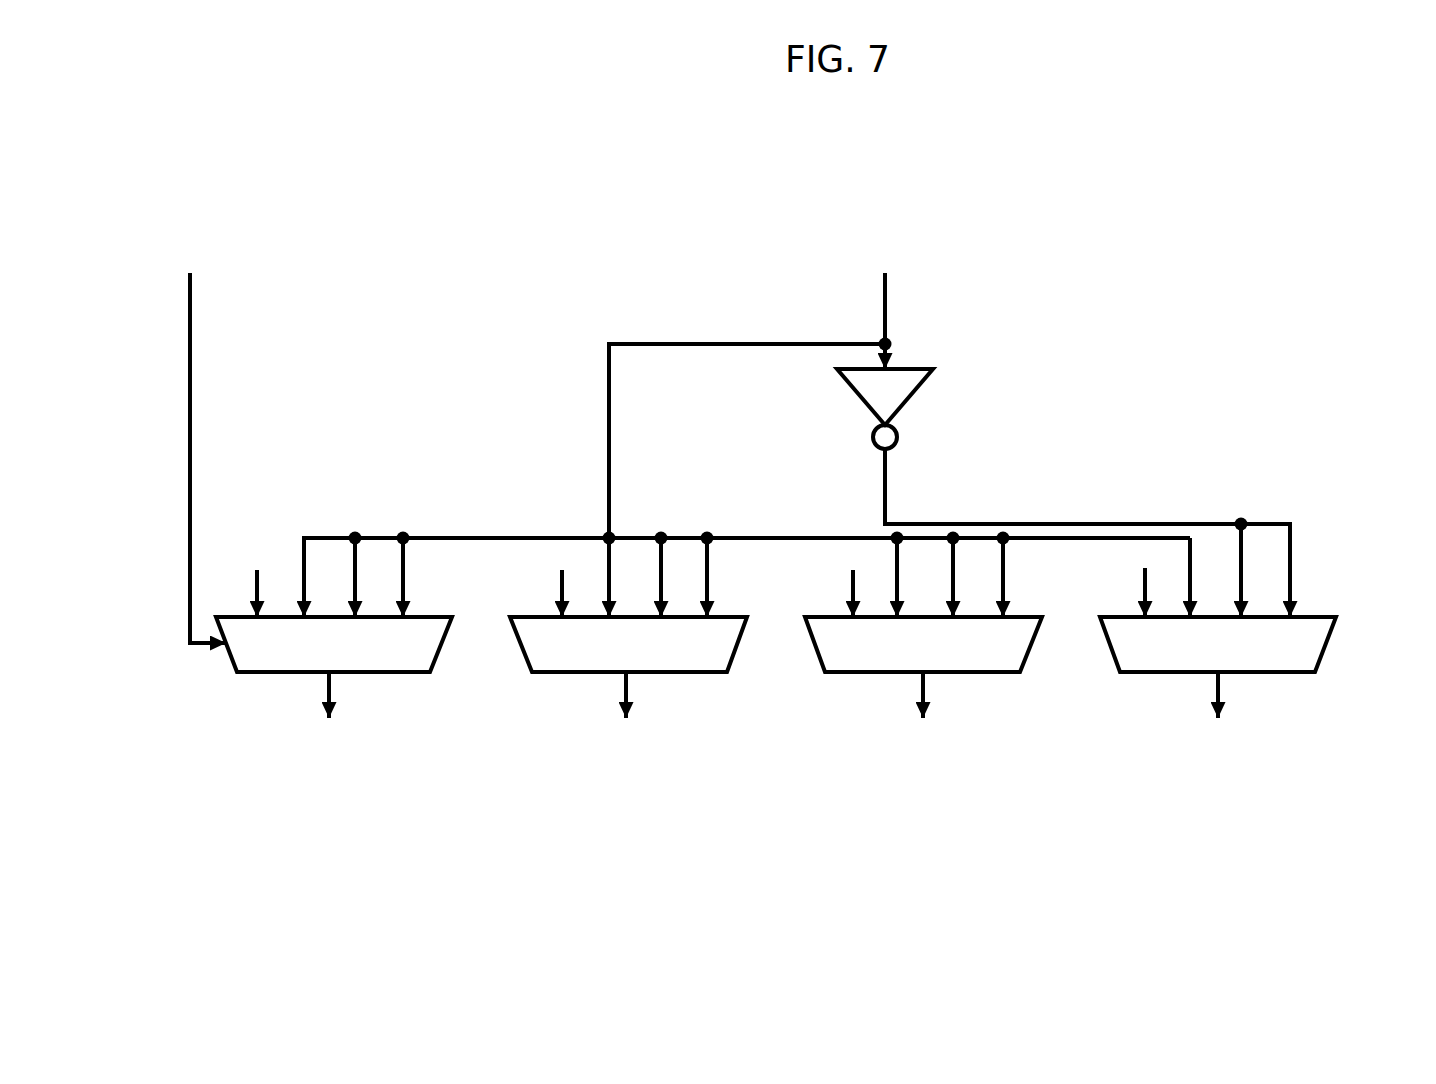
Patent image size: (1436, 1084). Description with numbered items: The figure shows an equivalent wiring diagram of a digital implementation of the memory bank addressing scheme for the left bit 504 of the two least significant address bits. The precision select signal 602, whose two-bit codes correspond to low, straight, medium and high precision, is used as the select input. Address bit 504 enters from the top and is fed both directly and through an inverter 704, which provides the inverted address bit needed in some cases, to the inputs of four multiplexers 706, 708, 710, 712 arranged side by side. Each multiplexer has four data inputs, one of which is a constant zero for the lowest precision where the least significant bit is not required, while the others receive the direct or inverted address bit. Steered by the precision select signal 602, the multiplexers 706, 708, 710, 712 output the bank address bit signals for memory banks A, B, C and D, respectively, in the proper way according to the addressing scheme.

The precision select signal 602 is at (249, 199).
The left bit of the two least significant address bits 504 is at (894, 256).
The inverter 704 is at (948, 394).
The first multiplexer 706 is at (266, 675).
The second multiplexer 708 is at (524, 675).
The third multiplexer 710 is at (819, 675).
The fourth multiplexer 712 is at (1321, 680).